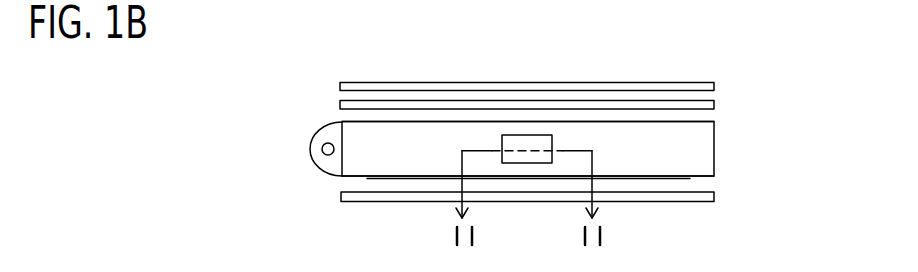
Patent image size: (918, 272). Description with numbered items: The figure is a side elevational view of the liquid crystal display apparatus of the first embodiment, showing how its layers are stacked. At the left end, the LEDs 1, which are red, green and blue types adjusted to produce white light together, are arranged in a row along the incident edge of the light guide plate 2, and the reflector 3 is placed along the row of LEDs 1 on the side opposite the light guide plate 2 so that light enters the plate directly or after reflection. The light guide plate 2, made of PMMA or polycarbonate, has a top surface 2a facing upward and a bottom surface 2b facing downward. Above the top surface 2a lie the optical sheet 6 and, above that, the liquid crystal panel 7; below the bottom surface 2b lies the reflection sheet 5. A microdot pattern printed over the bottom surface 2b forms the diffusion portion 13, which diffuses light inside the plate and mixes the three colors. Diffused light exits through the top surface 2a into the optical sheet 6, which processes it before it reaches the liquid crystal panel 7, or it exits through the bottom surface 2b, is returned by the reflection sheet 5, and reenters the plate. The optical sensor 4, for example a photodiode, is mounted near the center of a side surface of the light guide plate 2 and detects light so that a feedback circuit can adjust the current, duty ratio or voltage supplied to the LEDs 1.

The LEDs 1 is at (322, 149).
The light guide plate 2 is at (714, 141).
The top surface 2a is at (362, 121).
The bottom surface 2b is at (365, 176).
The reflector 3 is at (325, 173).
The optical sensor 4 is at (525, 163).
The reflection sheet 5 is at (714, 196).
The optical sheet 6 is at (714, 104).
The liquid crystal panel 7 is at (714, 86).
The diffusion portion 13 is at (690, 178).